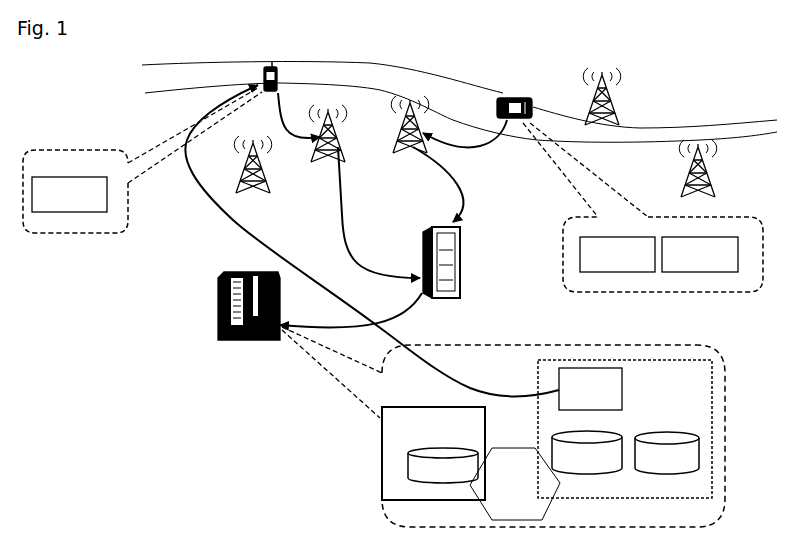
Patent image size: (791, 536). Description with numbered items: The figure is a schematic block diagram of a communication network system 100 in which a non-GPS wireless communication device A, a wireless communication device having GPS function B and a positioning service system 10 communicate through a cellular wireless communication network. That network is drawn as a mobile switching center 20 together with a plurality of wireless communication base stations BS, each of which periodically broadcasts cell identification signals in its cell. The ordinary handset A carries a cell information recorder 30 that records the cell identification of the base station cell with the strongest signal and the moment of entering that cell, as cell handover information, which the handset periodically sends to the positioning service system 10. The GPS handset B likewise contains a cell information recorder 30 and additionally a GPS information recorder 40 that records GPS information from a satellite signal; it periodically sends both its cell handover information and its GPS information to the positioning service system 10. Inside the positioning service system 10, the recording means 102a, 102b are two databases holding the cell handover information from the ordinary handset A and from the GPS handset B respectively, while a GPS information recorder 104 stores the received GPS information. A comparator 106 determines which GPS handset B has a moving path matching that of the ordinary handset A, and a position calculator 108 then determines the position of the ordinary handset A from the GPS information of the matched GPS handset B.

The positioning service system 10 is at (300, 345).
The mobile switching center 20 is at (443, 274).
The cell information recorder 30 is at (393, 190).
The GPS information recorder 40 is at (700, 254).
The communication network system 100 is at (405, 436).
The recording means (database) 102a is at (443, 465).
The recording means (database) 102b is at (587, 452).
The GPS information recorder 104 is at (667, 453).
The comparator 106 is at (515, 484).
The position calculator 108 is at (590, 389).
The non-GPS wireless communication device (ordinary handset) A is at (278, 76).
The wireless communication device having GPS function (GPS handset) B is at (514, 96).
The wireless communication base station BS is at (484, 137).